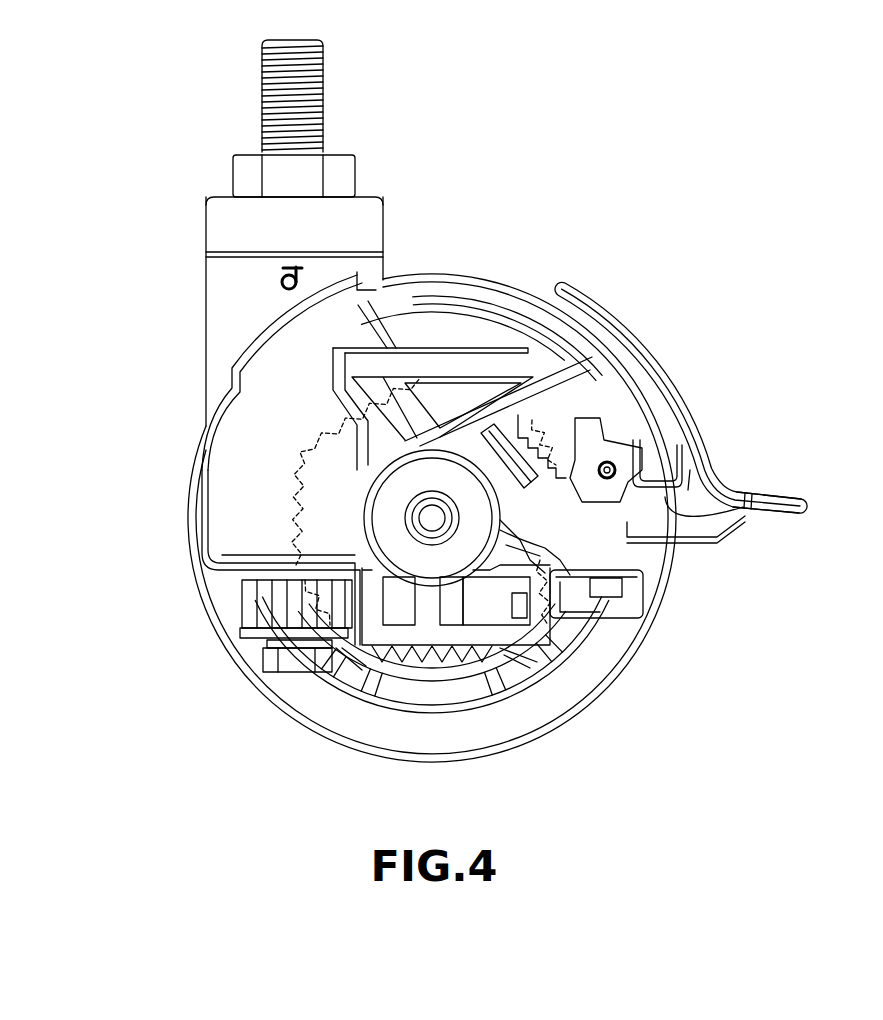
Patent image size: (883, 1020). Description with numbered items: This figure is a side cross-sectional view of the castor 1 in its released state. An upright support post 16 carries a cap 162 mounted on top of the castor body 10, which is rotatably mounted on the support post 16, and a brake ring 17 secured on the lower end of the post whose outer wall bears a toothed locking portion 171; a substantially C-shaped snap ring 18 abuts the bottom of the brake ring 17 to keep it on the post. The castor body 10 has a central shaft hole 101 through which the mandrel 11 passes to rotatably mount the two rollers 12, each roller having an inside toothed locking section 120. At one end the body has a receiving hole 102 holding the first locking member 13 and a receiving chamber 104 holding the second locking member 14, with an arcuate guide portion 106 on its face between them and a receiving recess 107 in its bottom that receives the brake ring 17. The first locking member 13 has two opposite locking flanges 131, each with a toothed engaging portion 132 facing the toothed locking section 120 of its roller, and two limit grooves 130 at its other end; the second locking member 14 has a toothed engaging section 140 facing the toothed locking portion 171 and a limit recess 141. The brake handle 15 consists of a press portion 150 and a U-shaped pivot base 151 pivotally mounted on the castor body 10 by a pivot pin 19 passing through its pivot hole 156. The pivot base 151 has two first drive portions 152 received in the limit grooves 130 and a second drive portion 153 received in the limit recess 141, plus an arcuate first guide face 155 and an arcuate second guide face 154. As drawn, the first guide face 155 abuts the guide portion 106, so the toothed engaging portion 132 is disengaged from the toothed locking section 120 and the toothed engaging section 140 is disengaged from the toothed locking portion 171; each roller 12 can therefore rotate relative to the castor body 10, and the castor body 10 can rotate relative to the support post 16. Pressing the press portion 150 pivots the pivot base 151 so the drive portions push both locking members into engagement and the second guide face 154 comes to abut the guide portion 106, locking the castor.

The castor 1 is at (760, 238).
The castor body 10 is at (378, 262).
The mandrel 11 is at (432, 518).
The roller 12 is at (468, 277).
The first locking member 13 is at (567, 402).
The second locking member 14 is at (618, 615).
The brake handle 15 is at (648, 345).
The support post 16 is at (322, 93).
The brake ring 17 is at (242, 636).
The snap ring 18 is at (295, 645).
The pivot pin 19 is at (618, 466).
The shaft hole 101 is at (380, 546).
The receiving hole 102 is at (588, 386).
The receiving chamber 104 is at (398, 625).
The guide portion 106 is at (555, 565).
The receiving recess 107 is at (228, 588).
The toothed locking section 120 is at (300, 448).
The limit groove 130 is at (580, 430).
The locking flange 131 is at (512, 440).
The toothed engaging portion 132 is at (546, 420).
The toothed engaging section 140 is at (362, 672).
The limit recess 141 is at (617, 593).
The press portion 150 is at (792, 498).
The pivot base 151 is at (668, 515).
The first drive portion 152 is at (612, 430).
The second drive portion 153 is at (612, 571).
The second guide face 154 is at (680, 540).
The first guide face 155 is at (505, 555).
The pivot hole 156 is at (614, 468).
The cap 162 is at (372, 210).
The toothed locking portion 171 is at (243, 607).